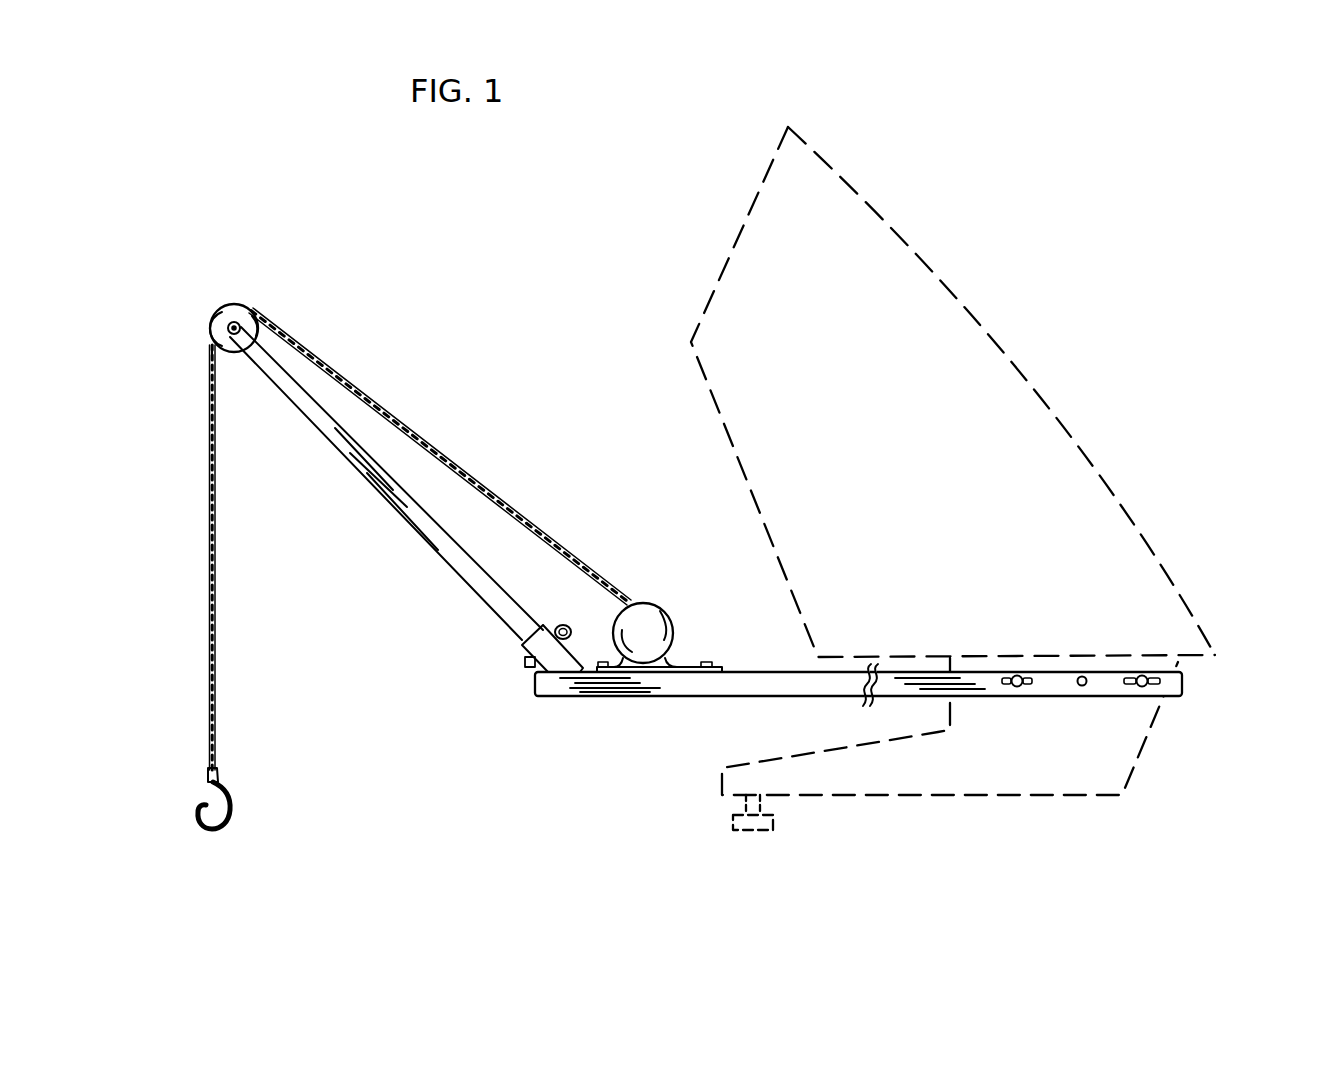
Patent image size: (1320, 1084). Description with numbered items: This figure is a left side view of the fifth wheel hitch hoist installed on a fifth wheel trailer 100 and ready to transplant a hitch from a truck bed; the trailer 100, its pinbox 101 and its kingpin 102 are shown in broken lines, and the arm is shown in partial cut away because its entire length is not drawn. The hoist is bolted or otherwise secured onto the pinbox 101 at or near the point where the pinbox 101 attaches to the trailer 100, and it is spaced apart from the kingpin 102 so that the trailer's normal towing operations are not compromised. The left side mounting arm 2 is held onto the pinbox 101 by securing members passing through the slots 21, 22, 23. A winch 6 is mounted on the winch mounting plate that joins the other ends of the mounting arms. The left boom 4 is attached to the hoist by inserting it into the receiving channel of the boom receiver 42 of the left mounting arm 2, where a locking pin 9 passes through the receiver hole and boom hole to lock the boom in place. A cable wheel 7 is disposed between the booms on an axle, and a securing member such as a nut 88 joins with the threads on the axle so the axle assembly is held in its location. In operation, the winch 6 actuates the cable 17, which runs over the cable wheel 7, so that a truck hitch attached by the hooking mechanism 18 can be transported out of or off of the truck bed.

The left side mounting arm 2 is at (715, 680).
The left boom 4 is at (453, 557).
The winch 6 is at (640, 627).
The cable wheel 7 is at (233, 305).
The locking pin 9 is at (562, 624).
The cable 17 is at (215, 615).
The hooking mechanism 18 is at (232, 812).
The slot 21 is at (1025, 687).
The slot 22 is at (1088, 687).
The slot 23 is at (1160, 683).
The boom receiver 42 is at (545, 650).
The nut 88 is at (228, 326).
The fifth wheel trailer 100 is at (794, 335).
The pinbox 101 is at (992, 768).
The kingpin 102 is at (757, 823).